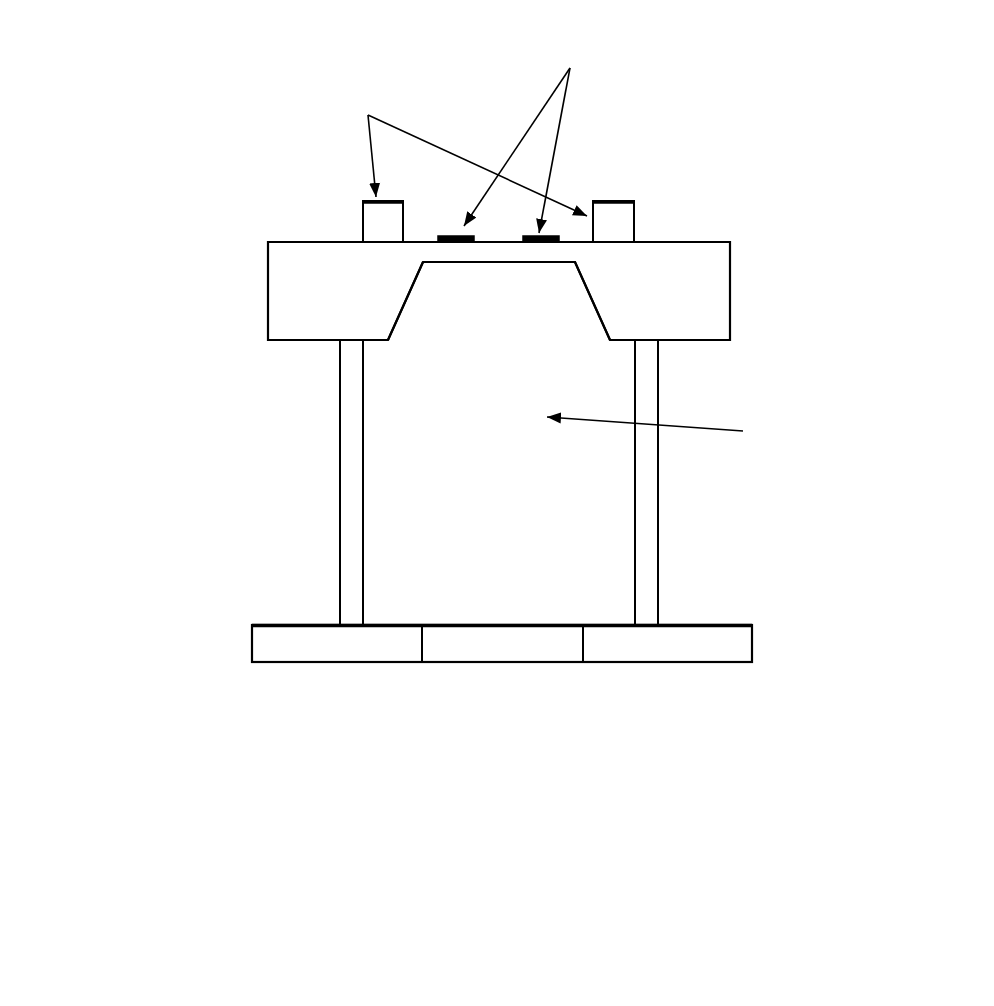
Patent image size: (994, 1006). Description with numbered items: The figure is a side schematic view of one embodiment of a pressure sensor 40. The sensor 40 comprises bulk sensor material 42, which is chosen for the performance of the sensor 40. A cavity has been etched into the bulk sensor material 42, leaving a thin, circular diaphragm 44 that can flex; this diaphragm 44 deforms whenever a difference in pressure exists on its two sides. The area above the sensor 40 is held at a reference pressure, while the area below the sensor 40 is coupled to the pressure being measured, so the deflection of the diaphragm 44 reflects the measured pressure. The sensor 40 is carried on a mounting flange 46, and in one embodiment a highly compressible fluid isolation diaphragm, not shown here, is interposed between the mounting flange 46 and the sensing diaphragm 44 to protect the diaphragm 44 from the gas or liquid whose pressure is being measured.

The sensor 40 is at (113, 191).
The bulk sensor material 42 is at (299, 347).
The diaphragm 44 is at (502, 263).
The mounting flange 46 is at (365, 673).